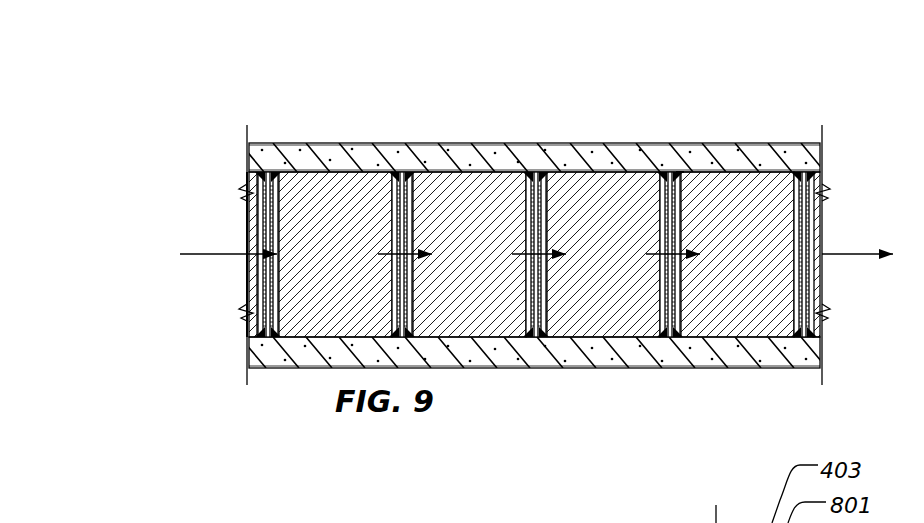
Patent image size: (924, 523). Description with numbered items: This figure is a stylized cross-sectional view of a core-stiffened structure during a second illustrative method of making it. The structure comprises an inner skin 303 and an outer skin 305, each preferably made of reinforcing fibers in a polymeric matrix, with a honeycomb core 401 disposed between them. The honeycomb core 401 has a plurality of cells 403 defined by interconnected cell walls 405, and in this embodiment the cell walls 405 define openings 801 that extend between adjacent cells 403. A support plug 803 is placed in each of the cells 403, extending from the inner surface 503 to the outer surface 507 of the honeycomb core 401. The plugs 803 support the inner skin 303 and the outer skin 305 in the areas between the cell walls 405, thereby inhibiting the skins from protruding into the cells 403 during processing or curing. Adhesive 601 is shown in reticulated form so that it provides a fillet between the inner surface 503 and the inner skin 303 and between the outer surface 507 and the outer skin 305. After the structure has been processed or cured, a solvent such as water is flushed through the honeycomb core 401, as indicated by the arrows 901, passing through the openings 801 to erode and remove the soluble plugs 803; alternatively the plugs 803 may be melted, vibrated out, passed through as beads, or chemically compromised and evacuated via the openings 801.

The inner skin 303 is at (714, 168).
The outer skin 305 is at (283, 368).
The honeycomb core 401 is at (243, 300).
The cells 403 is at (680, 178).
The cell walls 405 is at (248, 215).
The inner surface 503 is at (636, 170).
The outer surface 507 is at (686, 362).
The adhesive 601 is at (385, 168).
The openings 801 is at (248, 245).
The support plugs 803 is at (536, 254).
The arrows 901 is at (185, 255).